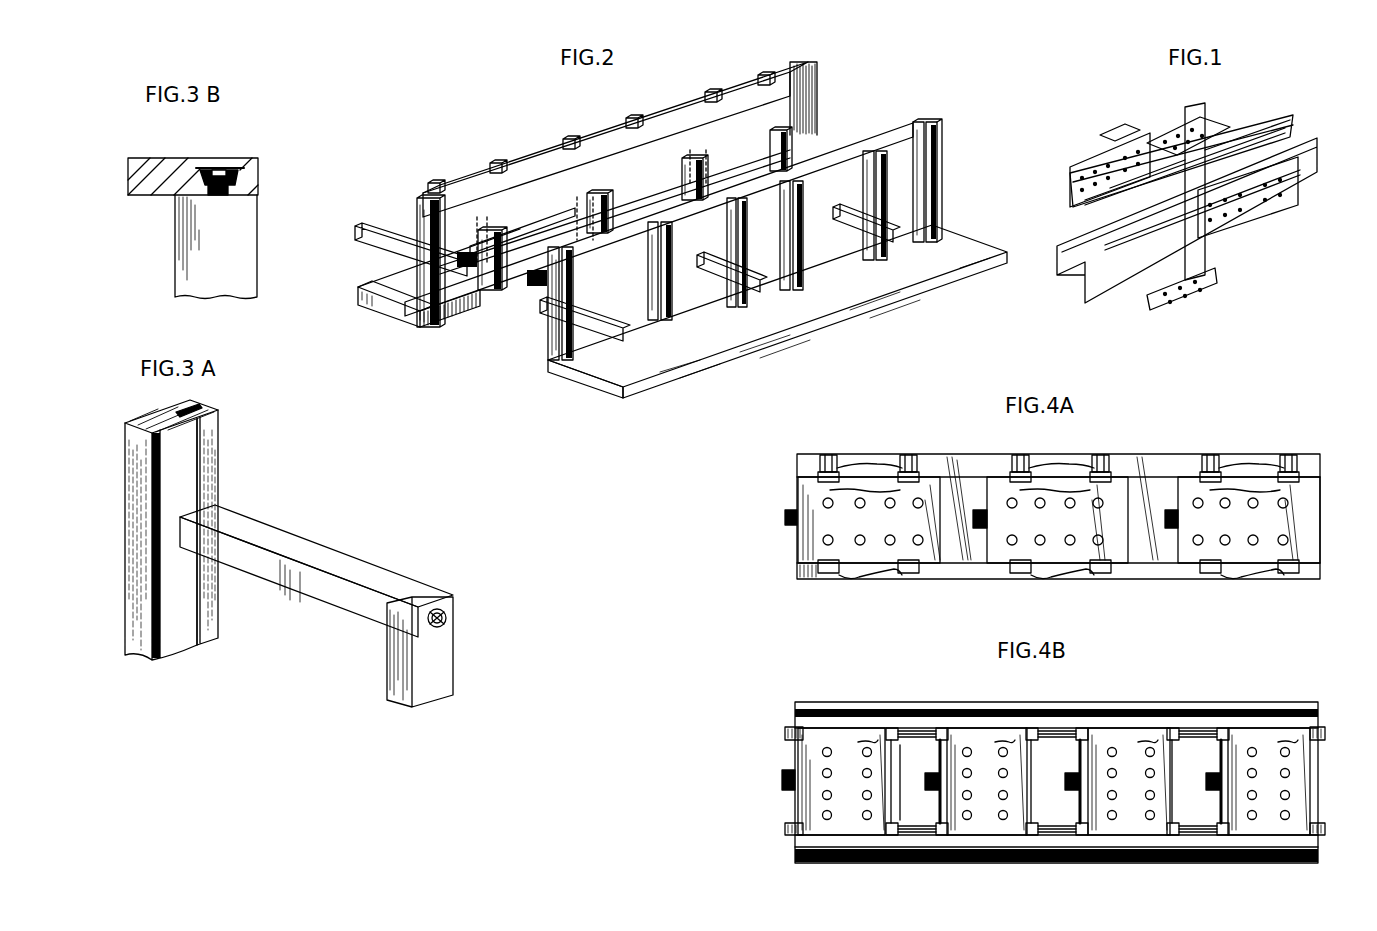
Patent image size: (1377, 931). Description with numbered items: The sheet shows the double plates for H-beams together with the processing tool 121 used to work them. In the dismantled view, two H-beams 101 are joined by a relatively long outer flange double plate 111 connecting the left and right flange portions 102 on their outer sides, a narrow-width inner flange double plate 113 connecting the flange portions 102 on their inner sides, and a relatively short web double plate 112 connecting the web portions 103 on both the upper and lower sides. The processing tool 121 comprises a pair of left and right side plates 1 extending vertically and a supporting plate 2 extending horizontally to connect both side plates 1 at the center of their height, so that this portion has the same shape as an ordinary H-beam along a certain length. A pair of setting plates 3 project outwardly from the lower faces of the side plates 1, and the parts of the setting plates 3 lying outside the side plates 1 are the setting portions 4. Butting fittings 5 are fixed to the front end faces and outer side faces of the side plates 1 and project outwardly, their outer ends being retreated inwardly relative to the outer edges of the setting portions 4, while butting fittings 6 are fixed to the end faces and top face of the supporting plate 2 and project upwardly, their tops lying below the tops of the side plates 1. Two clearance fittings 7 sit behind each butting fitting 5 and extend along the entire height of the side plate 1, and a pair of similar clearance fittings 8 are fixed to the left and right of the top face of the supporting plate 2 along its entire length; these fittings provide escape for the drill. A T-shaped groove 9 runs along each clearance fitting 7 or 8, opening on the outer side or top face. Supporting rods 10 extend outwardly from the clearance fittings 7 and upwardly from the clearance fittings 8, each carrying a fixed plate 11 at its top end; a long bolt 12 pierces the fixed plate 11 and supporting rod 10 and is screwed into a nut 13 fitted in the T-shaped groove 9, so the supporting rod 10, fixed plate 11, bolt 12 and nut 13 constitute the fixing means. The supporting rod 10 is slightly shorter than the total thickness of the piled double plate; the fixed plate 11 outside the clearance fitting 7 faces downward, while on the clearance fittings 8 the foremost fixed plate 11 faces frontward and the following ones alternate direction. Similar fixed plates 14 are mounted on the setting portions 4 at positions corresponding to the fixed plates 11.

In FIG. 2, the side plates 1 is at (424, 321).
In FIG. 4A, the side plates 1 is at (957, 460).
In FIG. 4B, the side plates 1 is at (969, 706).
In FIG. 2, the supporting plate 2 is at (530, 304).
In FIG. 4B, the supporting plate 2 is at (1070, 746).
In FIG. 2, the setting plates 3 is at (384, 316).
In FIG. 2, the setting portions 4 is at (388, 276).
In FIG. 4A, the setting portions 4 is at (974, 576).
In FIG. 2, the butting fittings 5 is at (386, 234).
In FIG. 4A, the butting fittings 5 is at (788, 529).
In FIG. 2, the butting fittings 6 is at (489, 229).
In FIG. 4B, the butting fittings 6 is at (782, 780).
In FIG. 3A, the clearance fittings 7 is at (210, 451).
In FIG. 2, the clearance fittings 7 is at (484, 172).
In FIG. 4A, the clearance fittings 7 is at (862, 464).
In FIG. 3A, the clearance fittings 8 is at (232, 532).
In FIG. 2, the clearance fittings 8 is at (516, 250).
In FIG. 4B, the clearance fittings 8 is at (894, 818).
In FIG. 3B, the T-shaped groove 9 is at (212, 170).
In FIG. 3A, the T-shaped groove 9 is at (192, 415).
In FIG. 4A, the T-shaped groove 9 is at (827, 458).
In FIG. 4B, the T-shaped groove 9 is at (916, 730).
In FIG. 3B, the supporting rod 10 is at (179, 249).
In FIG. 3A, the supporting rod 10 is at (316, 551).
In FIG. 3A, the fixed plate 11 is at (440, 666).
In FIG. 4A, the fixed plate 11 is at (1055, 487).
In FIG. 4B, the fixed plate 11 is at (1068, 739).
In FIG. 3B, the bolt 12 is at (228, 190).
In FIG. 3A, the bolt 12 is at (446, 620).
In FIG. 3B, the nut 13 is at (240, 177).
In FIG. 4A, the fixed plates 14 is at (1042, 585).
In FIG. 4B, the fixed plates 14 is at (786, 737).
In FIG. 1, the H-beams 101 is at (1340, 130).
In FIG. 1, the flange portions 102 is at (1274, 126).
In FIG. 1, the web portions 103 is at (1240, 150).
In FIG. 1, the outer flange double plate 111 is at (1094, 166).
In FIG. 4A, the outer flange double plate 111 is at (940, 574).
In FIG. 1, the web double plate 112 is at (1174, 136).
In FIG. 4B, the web double plate 112 is at (848, 848).
In FIG. 1, the inner flange double plate 113 is at (1165, 188).
In FIG. 2, the processing tool 121 is at (671, 114).
In FIG. 4A, the processing tool 121 is at (1152, 460).
In FIG. 4B, the processing tool 121 is at (1127, 704).